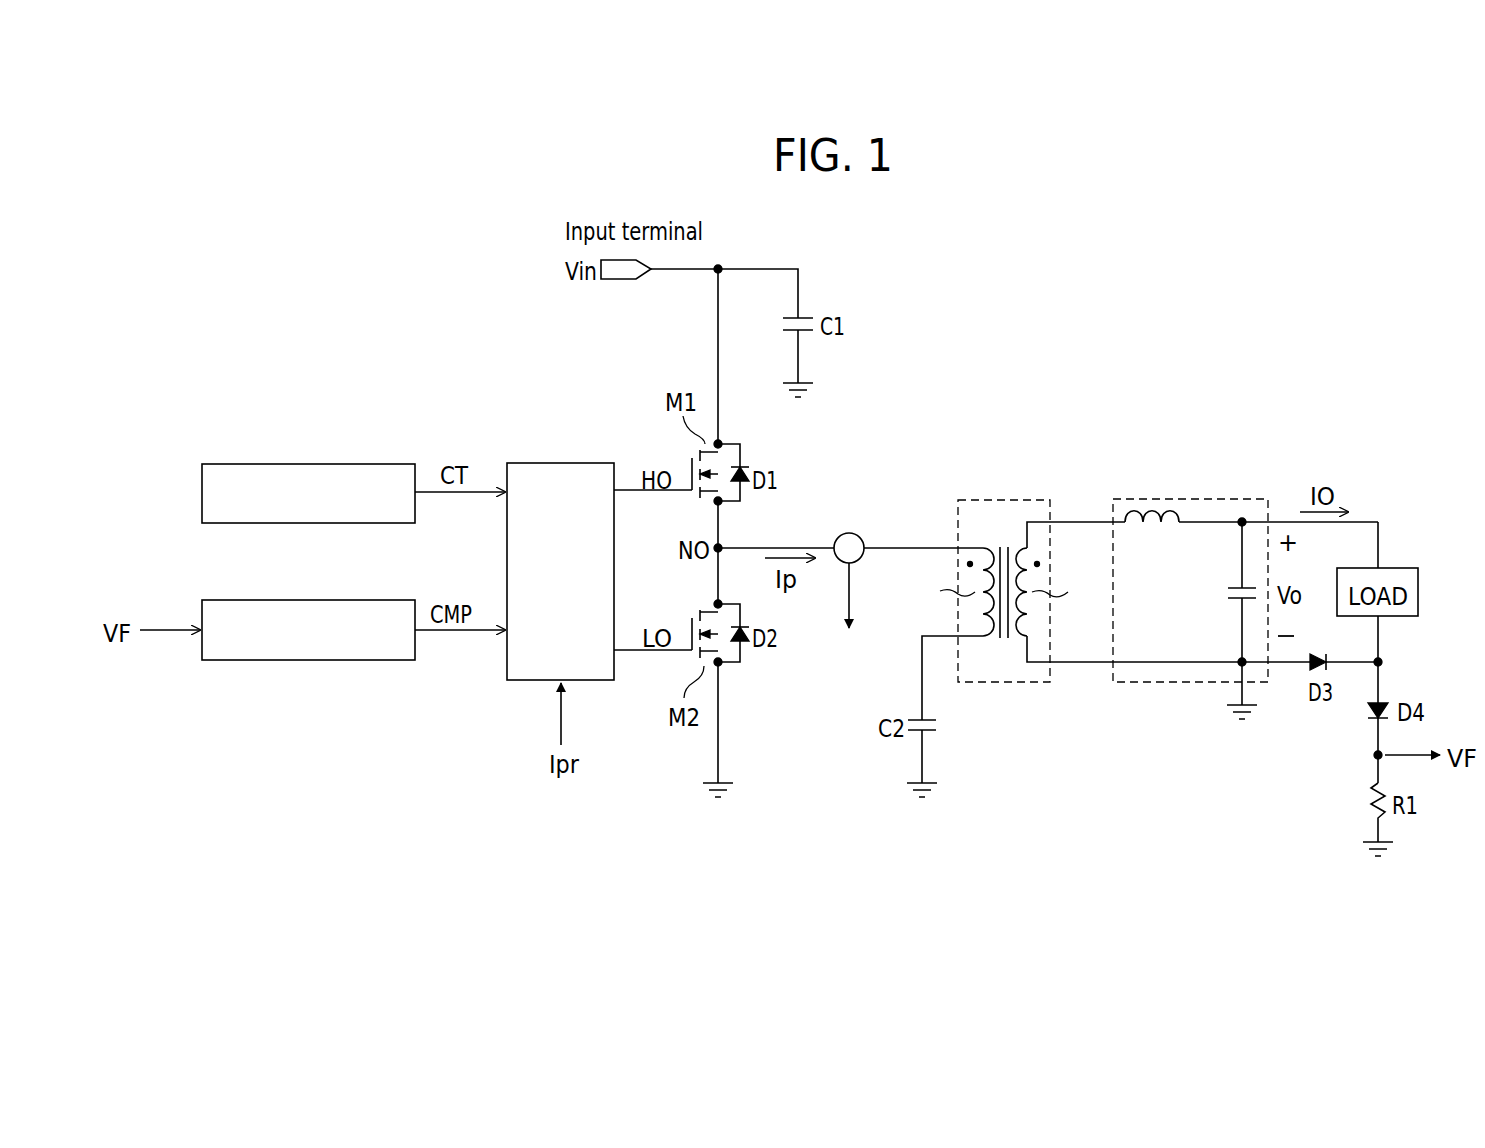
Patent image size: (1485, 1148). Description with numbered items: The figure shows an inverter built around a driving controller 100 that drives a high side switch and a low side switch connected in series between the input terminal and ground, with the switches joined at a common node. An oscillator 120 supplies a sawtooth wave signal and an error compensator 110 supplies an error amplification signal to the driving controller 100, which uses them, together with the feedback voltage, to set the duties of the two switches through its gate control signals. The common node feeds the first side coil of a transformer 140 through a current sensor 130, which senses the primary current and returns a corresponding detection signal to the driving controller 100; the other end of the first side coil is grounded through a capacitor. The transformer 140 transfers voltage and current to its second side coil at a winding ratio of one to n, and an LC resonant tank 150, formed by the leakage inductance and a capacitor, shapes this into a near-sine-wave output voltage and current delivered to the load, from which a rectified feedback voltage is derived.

The driving controller 100 is at (575, 462).
The error compensator 110 is at (358, 598).
The oscillator 120 is at (358, 462).
The current sensor 130 is at (857, 533).
The transformer 140 is at (1023, 684).
The LC resonant tank 150 is at (1186, 684).